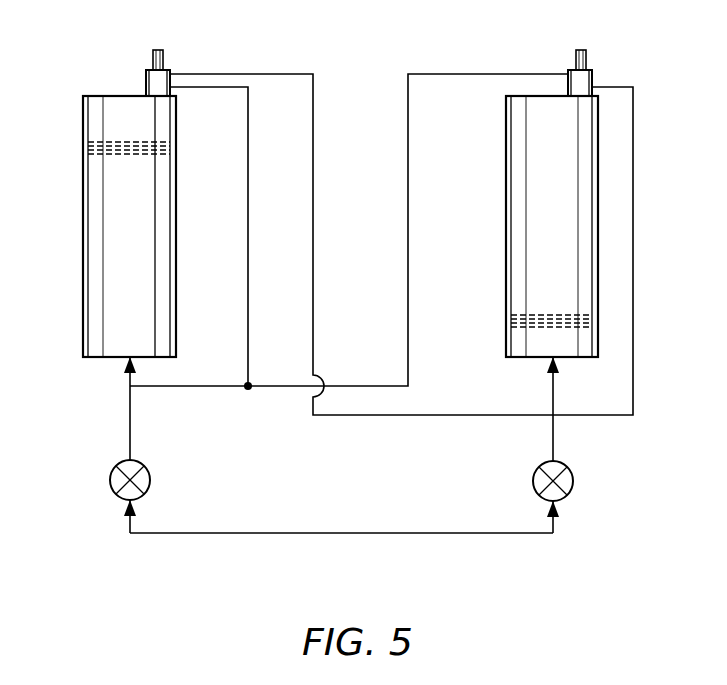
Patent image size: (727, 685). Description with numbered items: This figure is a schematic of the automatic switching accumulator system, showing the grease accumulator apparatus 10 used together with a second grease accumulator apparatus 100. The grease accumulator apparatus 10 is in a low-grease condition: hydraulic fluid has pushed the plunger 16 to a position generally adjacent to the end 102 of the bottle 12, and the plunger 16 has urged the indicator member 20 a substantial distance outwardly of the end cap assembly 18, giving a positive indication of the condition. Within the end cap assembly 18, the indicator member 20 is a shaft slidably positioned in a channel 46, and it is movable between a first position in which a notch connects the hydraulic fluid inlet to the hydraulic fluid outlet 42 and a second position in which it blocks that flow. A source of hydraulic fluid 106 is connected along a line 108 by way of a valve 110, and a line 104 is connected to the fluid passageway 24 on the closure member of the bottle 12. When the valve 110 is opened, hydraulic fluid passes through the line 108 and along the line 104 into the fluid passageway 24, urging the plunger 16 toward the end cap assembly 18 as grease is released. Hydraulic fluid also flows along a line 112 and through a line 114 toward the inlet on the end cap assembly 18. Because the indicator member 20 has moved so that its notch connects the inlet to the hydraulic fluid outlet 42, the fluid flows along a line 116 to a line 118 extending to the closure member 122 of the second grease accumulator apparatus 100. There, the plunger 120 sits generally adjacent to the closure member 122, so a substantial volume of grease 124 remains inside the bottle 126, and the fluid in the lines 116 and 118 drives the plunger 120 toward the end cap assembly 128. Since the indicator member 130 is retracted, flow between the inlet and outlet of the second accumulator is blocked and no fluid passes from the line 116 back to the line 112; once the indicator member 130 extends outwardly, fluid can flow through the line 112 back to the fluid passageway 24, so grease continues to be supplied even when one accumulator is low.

The grease accumulator apparatus 10 is at (68, 202).
The bottle 12 is at (83, 281).
The plunger 16 is at (85, 148).
The end cap assembly 18 is at (148, 78).
The indicator member 20 is at (162, 50).
The fluid passageway 24 is at (124, 363).
The hydraulic fluid outlet 42 is at (171, 74).
The channel 46 is at (172, 91).
The second grease accumulator apparatus 100 is at (600, 243).
The end of the bottle 102 is at (100, 96).
The line 104 is at (128, 441).
The source of hydraulic fluid 106 is at (348, 533).
The line 108 is at (230, 533).
The valve 110 is at (116, 488).
The line 112 is at (448, 73).
The line 114 is at (247, 267).
The line 116 is at (315, 190).
The line 118 is at (551, 400).
The plunger 120 is at (510, 318).
The closure member 122 is at (598, 360).
The grease 124 is at (509, 144).
The bottle 126 is at (510, 228).
The end cap assembly 128 is at (593, 76).
The indicator member 130 is at (587, 50).